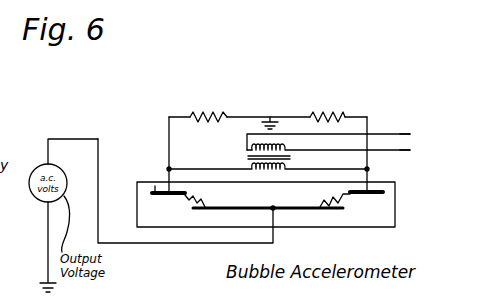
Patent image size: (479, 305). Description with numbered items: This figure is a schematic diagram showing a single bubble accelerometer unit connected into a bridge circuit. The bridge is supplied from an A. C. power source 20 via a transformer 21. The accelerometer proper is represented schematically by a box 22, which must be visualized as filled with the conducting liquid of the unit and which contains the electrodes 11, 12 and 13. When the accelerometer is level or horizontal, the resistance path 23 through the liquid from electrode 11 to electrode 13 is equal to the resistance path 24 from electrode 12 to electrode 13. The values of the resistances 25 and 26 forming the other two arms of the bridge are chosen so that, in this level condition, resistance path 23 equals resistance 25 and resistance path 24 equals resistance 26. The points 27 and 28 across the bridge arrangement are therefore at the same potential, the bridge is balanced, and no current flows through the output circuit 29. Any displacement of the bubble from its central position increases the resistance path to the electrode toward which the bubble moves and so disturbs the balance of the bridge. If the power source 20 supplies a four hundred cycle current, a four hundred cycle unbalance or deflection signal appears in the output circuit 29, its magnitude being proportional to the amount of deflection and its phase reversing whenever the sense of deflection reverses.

The electrode 11 is at (378, 190).
The electrode 12 is at (155, 188).
The electrode 13 is at (318, 210).
The A. C. power source 20 is at (410, 130).
The transformer 21 is at (241, 143).
The box 22 is at (232, 228).
The resistance path 23 is at (345, 200).
The resistance path 24 is at (183, 198).
The resistance 25 is at (330, 113).
The resistance 26 is at (229, 98).
The point 27 is at (273, 207).
The point 28 is at (272, 115).
The output circuit 29 is at (108, 124).